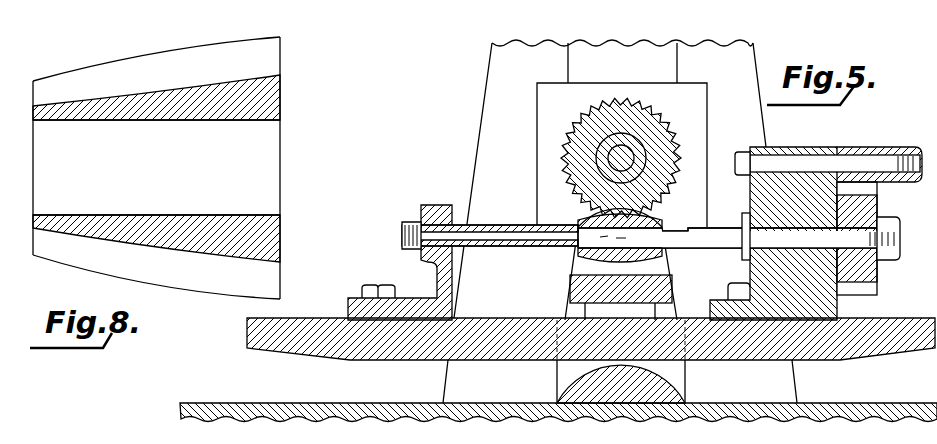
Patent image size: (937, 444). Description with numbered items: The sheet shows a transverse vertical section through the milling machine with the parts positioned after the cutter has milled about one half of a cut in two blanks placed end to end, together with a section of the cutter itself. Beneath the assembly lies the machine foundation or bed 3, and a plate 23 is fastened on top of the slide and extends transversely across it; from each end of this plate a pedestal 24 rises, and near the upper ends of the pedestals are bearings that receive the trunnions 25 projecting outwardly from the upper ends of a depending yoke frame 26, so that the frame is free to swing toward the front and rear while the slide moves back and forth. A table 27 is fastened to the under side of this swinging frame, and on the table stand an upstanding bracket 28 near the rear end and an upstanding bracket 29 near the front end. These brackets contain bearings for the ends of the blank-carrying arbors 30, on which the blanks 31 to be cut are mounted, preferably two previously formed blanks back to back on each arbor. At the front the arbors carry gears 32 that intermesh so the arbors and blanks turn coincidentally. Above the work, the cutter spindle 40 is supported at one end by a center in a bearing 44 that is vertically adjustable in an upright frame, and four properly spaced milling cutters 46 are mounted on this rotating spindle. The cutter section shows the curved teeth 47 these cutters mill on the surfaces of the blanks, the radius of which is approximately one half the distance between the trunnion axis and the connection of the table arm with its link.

In FIG. 5, the ground 3 is at (456, 422).
In FIG. 5, the plate 23 is at (562, 391).
In FIG. 5, the pedestal 24 is at (562, 310).
In FIG. 5, the trunnion 25 is at (571, 253).
In FIG. 5, the yoke frame 26 is at (673, 283).
In FIG. 5, the table 27 is at (831, 360).
In FIG. 5, the upstanding bracket 28 is at (437, 281).
In FIG. 5, the upstanding bracket 29 is at (838, 303).
In FIG. 5, the blank-carrying arbor 30 is at (516, 226).
In FIG. 8, the blank 31 is at (156, 145).
In FIG. 5, the blank 31 is at (663, 222).
In FIG. 5, the gear 32 is at (878, 200).
In FIG. 5, the cutter spindle 40 is at (673, 141).
In FIG. 5, the bearing 44 is at (622, 155).
In FIG. 5, the milling cutter 46 is at (615, 156).
In FIG. 8, the curved teeth 47 is at (156, 168).